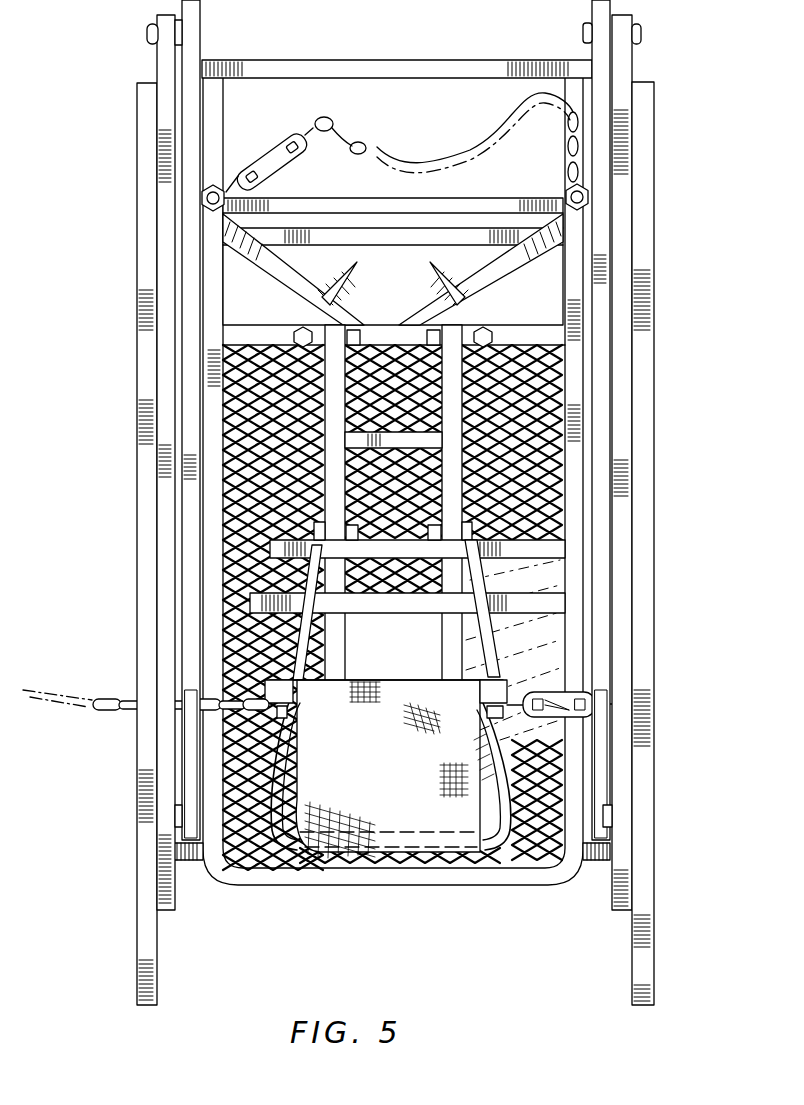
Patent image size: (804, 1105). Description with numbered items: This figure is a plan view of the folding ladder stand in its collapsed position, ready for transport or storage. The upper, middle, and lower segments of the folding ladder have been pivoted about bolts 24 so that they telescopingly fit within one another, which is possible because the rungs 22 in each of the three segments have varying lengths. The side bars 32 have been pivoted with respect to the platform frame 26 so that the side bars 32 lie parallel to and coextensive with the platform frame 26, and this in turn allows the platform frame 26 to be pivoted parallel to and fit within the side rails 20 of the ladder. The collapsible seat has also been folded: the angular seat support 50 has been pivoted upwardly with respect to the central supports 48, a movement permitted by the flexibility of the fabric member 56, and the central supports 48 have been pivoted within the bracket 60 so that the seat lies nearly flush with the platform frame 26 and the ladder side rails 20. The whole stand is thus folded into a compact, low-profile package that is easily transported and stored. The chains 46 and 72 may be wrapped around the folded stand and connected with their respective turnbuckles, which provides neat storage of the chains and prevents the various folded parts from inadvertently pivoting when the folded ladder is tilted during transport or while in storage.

The side rails 20 is at (157, 65).
The rungs 22 is at (375, 62).
The bolts 24 is at (147, 37).
The platform frame 26 is at (590, 372).
The side bars 32 is at (587, 412).
The chain 46 is at (428, 147).
The central supports 48 is at (472, 449).
The angular seat support 50 is at (483, 630).
The fabric member 56 is at (398, 786).
The bracket 60 is at (472, 322).
The chain 72 is at (65, 700).